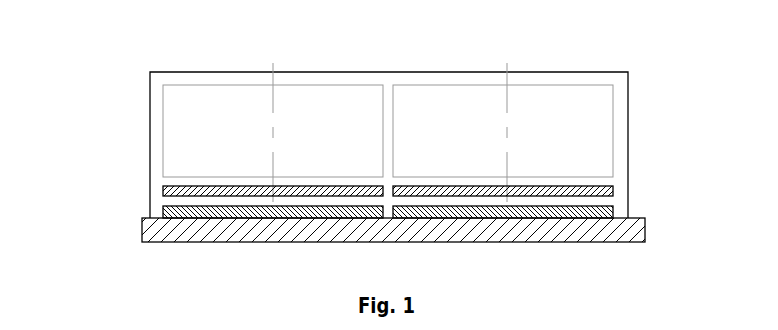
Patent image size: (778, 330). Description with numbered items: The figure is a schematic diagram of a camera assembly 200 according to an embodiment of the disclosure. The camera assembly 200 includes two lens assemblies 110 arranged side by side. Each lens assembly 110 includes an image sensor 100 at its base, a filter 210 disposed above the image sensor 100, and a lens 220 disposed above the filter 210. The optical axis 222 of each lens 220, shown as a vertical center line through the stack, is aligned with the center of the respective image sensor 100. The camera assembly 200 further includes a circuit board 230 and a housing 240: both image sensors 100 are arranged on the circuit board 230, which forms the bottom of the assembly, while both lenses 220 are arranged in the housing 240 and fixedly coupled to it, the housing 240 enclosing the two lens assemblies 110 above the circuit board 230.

The camera assembly 200 is at (156, 39).
The housing 240 is at (628, 105).
The circuit board 230 is at (620, 235).
The optical axis 222 is at (273, 76).
The lens assembly 110 is at (388, 152).
The lens 220 is at (175, 137).
The filter 210 is at (170, 190).
The image sensor 100 is at (386, 207).